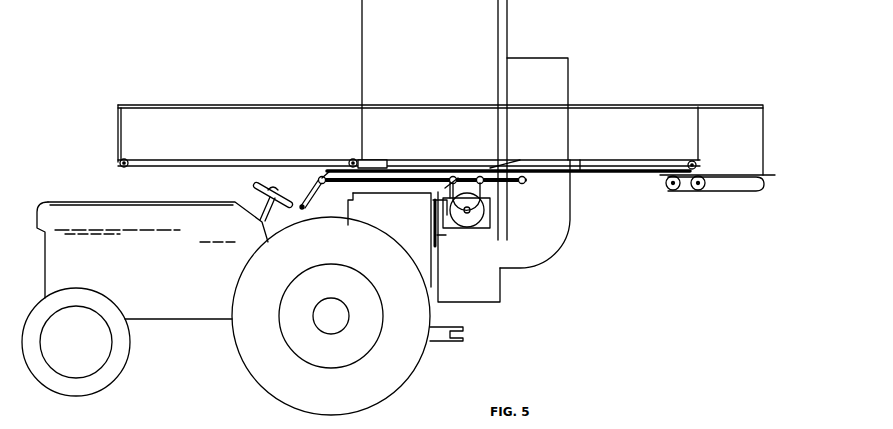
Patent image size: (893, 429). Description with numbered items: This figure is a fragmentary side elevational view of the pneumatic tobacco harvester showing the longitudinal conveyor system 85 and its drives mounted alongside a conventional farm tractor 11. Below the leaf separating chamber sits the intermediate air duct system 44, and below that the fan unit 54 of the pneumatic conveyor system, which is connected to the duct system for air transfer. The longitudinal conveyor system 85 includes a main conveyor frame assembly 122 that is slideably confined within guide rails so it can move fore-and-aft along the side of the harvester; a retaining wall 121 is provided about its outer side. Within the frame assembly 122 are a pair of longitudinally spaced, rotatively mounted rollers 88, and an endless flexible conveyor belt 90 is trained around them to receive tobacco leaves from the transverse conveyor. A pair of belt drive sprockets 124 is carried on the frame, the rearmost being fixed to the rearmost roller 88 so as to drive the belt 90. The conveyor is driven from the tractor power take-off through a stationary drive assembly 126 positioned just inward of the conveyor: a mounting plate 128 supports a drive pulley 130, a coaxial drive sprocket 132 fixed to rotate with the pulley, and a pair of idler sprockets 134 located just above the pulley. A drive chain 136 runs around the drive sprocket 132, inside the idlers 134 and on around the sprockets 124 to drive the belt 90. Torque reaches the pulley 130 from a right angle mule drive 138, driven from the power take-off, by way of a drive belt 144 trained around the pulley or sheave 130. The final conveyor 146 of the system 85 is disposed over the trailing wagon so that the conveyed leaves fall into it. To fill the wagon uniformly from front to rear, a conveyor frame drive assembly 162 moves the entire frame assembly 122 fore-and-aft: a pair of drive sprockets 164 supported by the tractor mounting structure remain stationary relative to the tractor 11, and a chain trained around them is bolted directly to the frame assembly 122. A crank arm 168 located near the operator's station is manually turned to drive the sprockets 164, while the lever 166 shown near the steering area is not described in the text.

The farm tractor 11 is at (184, 338).
The intermediate air duct system 44 is at (566, 256).
The fan unit 54 is at (508, 286).
The longitudinal conveyor system 85 is at (205, 52).
The rollers 88 is at (118, 168).
The endless flexible conveyor belt 90 is at (176, 158).
The retaining wall 121 is at (278, 106).
The main conveyor frame assembly 122 is at (110, 161).
The belt drive sprockets 124 is at (358, 160).
The stationary drive assembly 126 is at (492, 231).
The mounting plate 128 is at (492, 207).
The drive pulley 130 is at (468, 229).
The drive sprocket 132 is at (457, 226).
The idler sprockets 134 is at (490, 168).
The drive chain 136 is at (436, 222).
The right angle mule drive 138 is at (426, 239).
The drive belt 144 is at (440, 241).
The final conveyor 146 is at (782, 184).
The conveyor frame drive assembly 162 is at (340, 209).
The drive sprockets 164 is at (313, 178).
The control lever 166 is at (358, 190).
The crank arm 168 is at (262, 222).